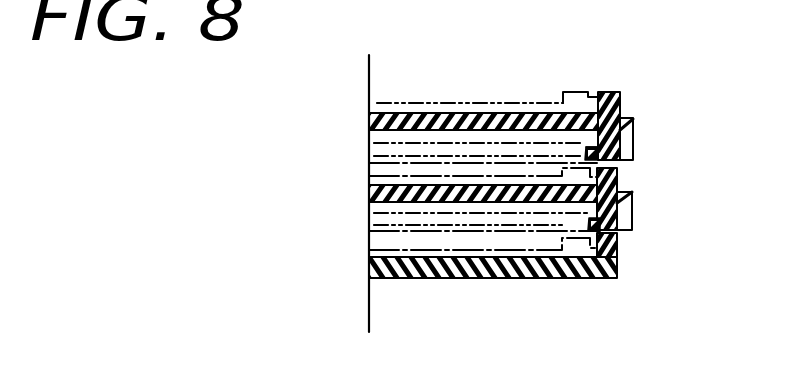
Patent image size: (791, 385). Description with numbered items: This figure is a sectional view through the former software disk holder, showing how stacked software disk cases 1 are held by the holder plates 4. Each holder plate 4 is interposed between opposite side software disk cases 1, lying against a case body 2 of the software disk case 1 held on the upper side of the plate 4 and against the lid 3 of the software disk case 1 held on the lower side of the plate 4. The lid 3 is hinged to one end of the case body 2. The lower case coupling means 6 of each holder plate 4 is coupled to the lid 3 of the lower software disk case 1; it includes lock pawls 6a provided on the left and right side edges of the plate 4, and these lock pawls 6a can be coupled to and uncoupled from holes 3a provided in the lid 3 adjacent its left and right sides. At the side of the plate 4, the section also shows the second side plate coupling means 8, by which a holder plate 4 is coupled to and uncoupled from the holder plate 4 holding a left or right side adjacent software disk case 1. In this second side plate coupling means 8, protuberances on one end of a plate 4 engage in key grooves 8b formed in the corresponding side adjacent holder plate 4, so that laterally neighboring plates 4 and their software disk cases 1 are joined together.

The software disk case 1 is at (503, 137).
The case body 2 is at (402, 179).
The lid 3 is at (408, 141).
The holes 3a is at (582, 153).
The holder plate 4 is at (450, 113).
The lower case coupling means 6 is at (605, 161).
The lock pawls 6a is at (592, 163).
The second side plate coupling means 8 is at (633, 125).
The key grooves 8b is at (633, 143).